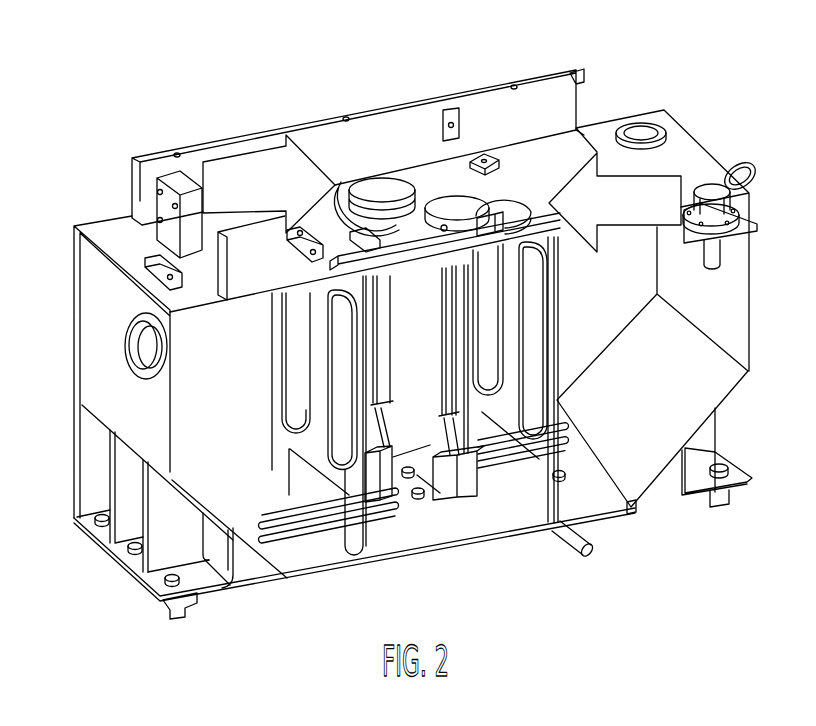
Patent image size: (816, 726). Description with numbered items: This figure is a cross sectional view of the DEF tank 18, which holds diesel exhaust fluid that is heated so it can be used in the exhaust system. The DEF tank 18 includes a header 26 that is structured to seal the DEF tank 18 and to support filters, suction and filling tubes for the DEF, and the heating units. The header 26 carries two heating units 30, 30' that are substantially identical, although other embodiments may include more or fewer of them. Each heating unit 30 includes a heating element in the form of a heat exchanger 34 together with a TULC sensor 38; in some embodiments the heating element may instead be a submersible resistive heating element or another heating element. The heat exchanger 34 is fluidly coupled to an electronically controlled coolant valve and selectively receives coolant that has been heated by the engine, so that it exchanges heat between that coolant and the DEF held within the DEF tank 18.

The DEF tank 18 is at (93, 306).
The header 26 is at (541, 185).
The heating unit 30 is at (478, 141).
The heating unit 30' is at (374, 156).
The heat exchanger 34 is at (311, 535).
The TULC sensor 38 is at (488, 478).